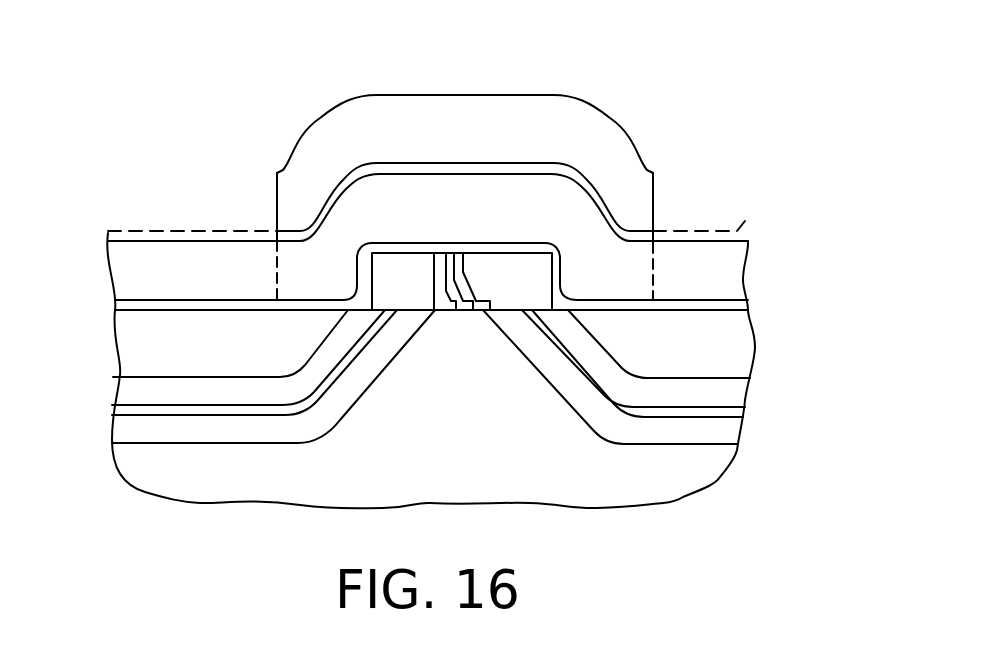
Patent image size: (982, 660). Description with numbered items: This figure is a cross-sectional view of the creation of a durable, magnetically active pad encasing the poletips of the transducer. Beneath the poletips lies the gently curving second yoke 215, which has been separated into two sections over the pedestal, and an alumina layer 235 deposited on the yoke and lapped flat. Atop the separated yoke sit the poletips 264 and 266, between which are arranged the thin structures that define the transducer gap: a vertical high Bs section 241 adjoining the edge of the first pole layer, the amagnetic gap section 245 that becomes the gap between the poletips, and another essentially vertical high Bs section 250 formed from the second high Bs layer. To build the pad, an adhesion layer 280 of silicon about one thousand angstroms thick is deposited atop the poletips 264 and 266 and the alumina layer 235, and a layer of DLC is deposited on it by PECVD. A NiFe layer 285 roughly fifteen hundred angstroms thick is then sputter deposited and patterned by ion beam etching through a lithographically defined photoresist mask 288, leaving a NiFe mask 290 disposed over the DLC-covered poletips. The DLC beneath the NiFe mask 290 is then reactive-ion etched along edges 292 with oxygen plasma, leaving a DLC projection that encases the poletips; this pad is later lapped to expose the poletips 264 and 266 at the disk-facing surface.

The second yoke 215 is at (758, 378).
The alumina layer 235 is at (720, 343).
The vertical high Bs section 241 is at (440, 311).
The gap section 245 is at (487, 311).
The vertical high Bs section 250 is at (462, 267).
The poletip 264 is at (395, 268).
The poletip 266 is at (527, 268).
The adhesion layer 280 is at (157, 298).
The NiFe layer 285 is at (748, 223).
The photoresist mask 288 is at (464, 118).
The NiFe mask 290 is at (603, 203).
The edges 292 is at (277, 198).